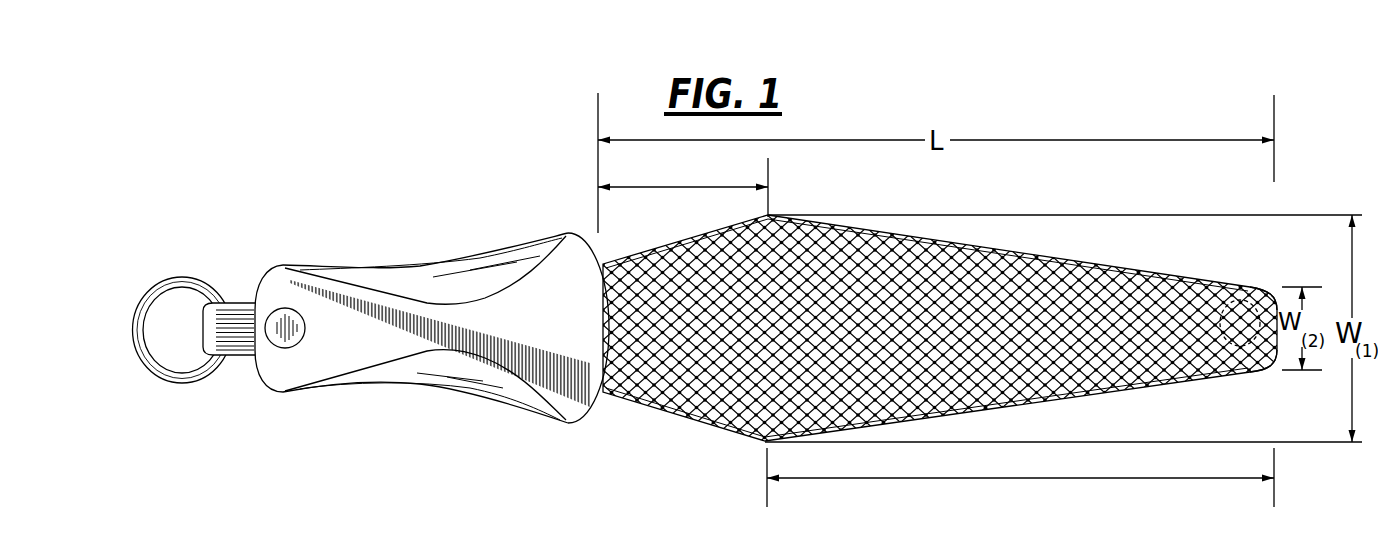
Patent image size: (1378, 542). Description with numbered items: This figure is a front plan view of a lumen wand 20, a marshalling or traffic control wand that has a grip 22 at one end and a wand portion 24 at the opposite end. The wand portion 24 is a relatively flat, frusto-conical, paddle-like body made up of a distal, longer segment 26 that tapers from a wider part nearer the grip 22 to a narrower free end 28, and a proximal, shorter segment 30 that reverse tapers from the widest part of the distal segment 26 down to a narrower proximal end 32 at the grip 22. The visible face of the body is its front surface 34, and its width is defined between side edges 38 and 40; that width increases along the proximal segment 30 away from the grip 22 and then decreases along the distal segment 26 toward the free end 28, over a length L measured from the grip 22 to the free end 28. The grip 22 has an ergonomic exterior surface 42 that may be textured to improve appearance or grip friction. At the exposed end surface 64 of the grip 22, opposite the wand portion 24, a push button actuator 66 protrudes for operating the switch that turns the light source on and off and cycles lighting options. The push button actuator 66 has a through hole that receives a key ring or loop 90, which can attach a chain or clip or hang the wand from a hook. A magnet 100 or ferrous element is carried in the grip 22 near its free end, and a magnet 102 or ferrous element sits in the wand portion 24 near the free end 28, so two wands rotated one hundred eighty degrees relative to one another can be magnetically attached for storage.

The lumen wand 20 is at (1105, 190).
The grip 22 is at (393, 258).
The wand portion 24 is at (1290, 268).
The distal segment 26 is at (1115, 478).
The free end 28 is at (1278, 358).
The proximal segment 30 is at (703, 188).
The proximal end 32 is at (603, 404).
The front surface 34 is at (852, 265).
The side edge 38 is at (1097, 243).
The side edge 40 is at (1093, 404).
The exterior surface 42 is at (548, 306).
The exposed end surface 64 is at (257, 370).
The push button actuator 66 is at (205, 316).
The ring 90 is at (155, 364).
The magnet 100 is at (292, 336).
The magnet 102 is at (1247, 290).